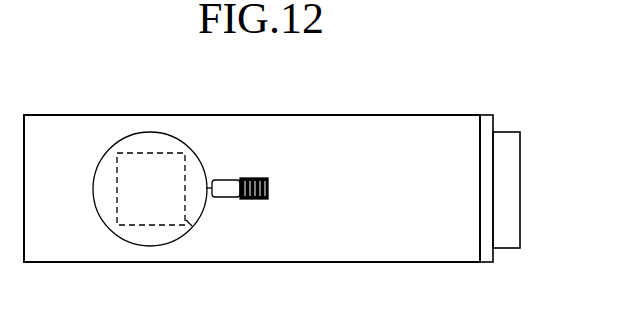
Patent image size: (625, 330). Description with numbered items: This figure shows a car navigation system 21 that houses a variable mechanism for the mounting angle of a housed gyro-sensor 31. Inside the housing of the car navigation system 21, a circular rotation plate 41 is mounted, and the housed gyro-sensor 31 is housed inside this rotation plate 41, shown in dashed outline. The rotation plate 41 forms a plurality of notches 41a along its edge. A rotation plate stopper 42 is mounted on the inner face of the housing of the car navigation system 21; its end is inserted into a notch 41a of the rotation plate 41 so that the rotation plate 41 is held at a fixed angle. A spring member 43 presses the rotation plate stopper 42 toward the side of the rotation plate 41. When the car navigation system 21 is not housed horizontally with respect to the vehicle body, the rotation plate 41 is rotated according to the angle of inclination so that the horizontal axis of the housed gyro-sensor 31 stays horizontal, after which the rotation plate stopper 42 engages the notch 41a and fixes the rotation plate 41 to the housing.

The car navigation system 21 is at (520, 132).
The housed gyro-sensor 31 is at (124, 136).
The rotation plate 41 is at (155, 247).
The notch 41a is at (190, 224).
The rotation plate stopper 42 is at (226, 180).
The spring member 43 is at (262, 178).